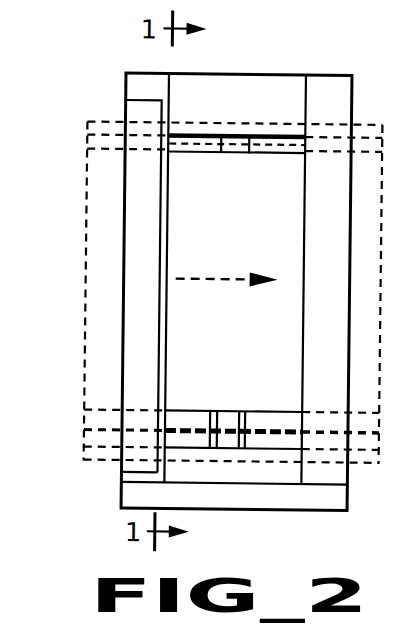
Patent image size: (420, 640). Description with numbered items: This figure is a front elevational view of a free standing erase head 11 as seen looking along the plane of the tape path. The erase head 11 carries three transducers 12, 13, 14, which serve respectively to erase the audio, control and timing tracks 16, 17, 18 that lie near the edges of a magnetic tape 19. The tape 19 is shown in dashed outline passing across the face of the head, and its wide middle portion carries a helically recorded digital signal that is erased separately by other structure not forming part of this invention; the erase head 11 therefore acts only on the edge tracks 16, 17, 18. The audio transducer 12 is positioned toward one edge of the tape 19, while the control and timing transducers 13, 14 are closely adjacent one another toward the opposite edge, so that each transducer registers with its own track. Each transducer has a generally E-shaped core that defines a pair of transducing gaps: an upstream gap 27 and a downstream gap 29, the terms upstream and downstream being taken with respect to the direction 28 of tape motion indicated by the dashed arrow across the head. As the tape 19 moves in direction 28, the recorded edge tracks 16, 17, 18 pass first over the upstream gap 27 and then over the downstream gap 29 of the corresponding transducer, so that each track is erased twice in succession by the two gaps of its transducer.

The free standing erase head 11 is at (354, 70).
The transducer 12 is at (278, 136).
The transducer 13 is at (265, 420).
The transducer 14 is at (265, 447).
The audio track 16 is at (98, 142).
The control track 17 is at (93, 421).
The timing track 18 is at (86, 443).
The magnetic tape 19 is at (375, 112).
The transducing gap 27 is at (221, 156).
The direction of tape motion 28 is at (212, 273).
The transducing gap 29 is at (254, 158).